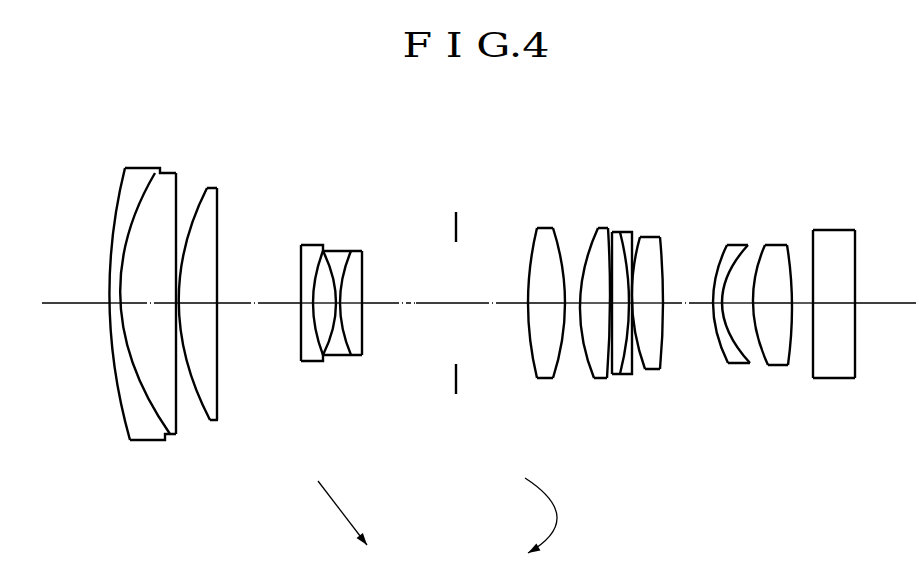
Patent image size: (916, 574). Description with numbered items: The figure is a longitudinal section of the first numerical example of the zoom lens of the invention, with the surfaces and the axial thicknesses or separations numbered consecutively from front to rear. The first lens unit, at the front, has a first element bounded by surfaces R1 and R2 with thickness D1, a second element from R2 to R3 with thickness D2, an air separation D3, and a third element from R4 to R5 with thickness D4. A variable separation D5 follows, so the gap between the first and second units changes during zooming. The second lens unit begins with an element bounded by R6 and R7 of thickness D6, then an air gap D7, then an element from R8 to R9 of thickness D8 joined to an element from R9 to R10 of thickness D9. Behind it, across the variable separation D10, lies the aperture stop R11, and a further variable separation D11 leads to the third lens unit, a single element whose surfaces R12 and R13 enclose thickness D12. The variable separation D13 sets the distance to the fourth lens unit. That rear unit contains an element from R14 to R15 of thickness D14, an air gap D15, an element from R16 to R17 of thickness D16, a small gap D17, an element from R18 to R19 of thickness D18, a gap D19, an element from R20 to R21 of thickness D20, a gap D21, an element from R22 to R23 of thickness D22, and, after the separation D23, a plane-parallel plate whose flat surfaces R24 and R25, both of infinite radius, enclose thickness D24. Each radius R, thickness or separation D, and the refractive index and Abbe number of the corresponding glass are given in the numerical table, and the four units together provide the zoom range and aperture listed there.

The radius of curvature of first surface R1 is at (120, 185).
The radius of curvature of second surface R2 is at (150, 185).
The radius of curvature of third surface R3 is at (175, 200).
The radius of curvature of fourth surface R4 is at (203, 200).
The radius of curvature of fifth surface R5 is at (214, 190).
The radius of curvature of sixth surface R6 is at (300, 262).
The radius of curvature of seventh surface R7 is at (317, 256).
The radius of curvature of eighth surface R8 is at (335, 251).
The radius of curvature of ninth surface R9 is at (342, 251).
The radius of curvature of tenth surface R10 is at (360, 251).
The aperture stop R11 is at (456, 213).
The radius of curvature of twelfth surface R12 is at (532, 248).
The radius of curvature of thirteenth surface R13 is at (550, 232).
The radius of curvature of fourteenth surface R14 is at (583, 262).
The radius of curvature of fifteenth surface R15 is at (602, 238).
The radius of curvature of sixteenth surface R16 is at (607, 258).
The radius of curvature of seventeenth surface R17 is at (627, 237).
The radius of curvature of eighteenth surface R18 is at (638, 237).
The radius of curvature of nineteenth surface R19 is at (661, 243).
The radius of curvature of twentieth surface R20 is at (720, 262).
The radius of curvature of twenty-first surface R21 is at (748, 250).
The radius of curvature of twenty-second surface R22 is at (757, 255).
The radius of curvature of twenty-third surface R23 is at (789, 256).
The radius of curvature of twenty-fourth surface R24 is at (816, 250).
The radius of curvature of twenty-fifth surface R25 is at (857, 255).
The axial thickness D1 is at (115, 378).
The axial thickness D2 is at (148, 303).
The axial separation D3 is at (180, 375).
The axial thickness D4 is at (213, 421).
The variable axial separation D5 is at (252, 303).
The axial thickness D6 is at (300, 340).
The axial separation D7 is at (318, 322).
The axial thickness D8 is at (337, 325).
The axial thickness D9 is at (341, 318).
The variable axial separation D10 is at (397, 303).
The variable axial separation D11 is at (490, 303).
The axial thickness D12 is at (542, 358).
The variable axial separation D13 is at (568, 345).
The axial thickness D14 is at (592, 348).
The axial separation D15 is at (614, 378).
The axial thickness D16 is at (626, 345).
The axial separation D17 is at (634, 342).
The axial thickness D18 is at (655, 350).
The axial separation D19 is at (683, 303).
The axial thickness D20 is at (714, 315).
The axial separation D21 is at (744, 315).
The axial thickness D22 is at (776, 312).
The axial separation D23 is at (803, 312).
The axial thickness D24 is at (836, 312).